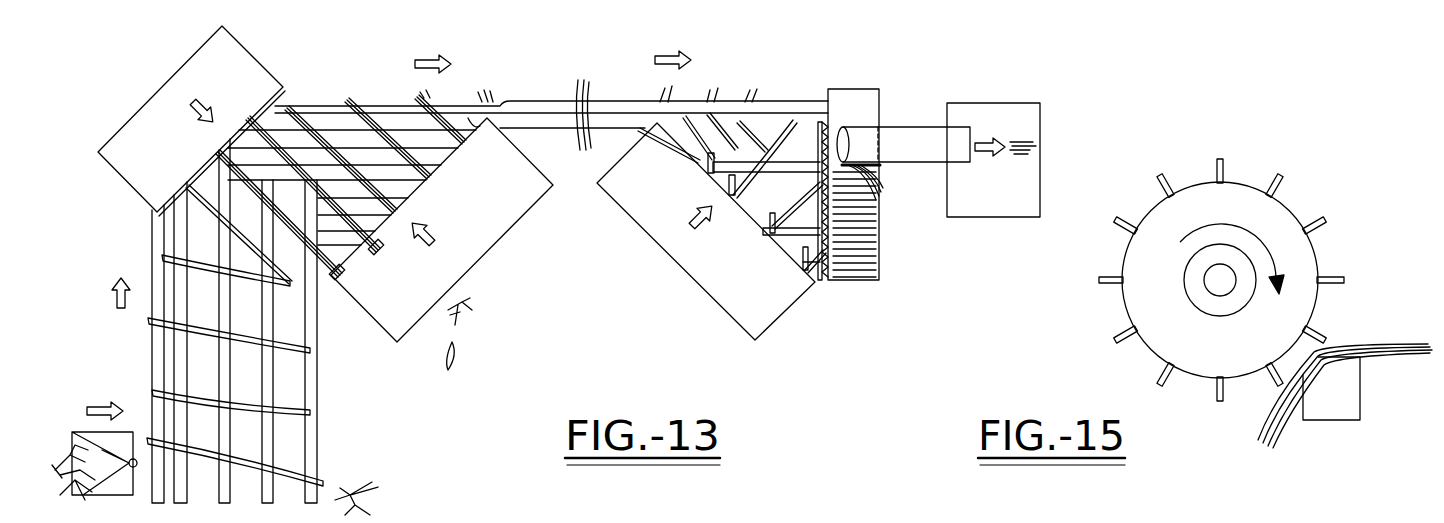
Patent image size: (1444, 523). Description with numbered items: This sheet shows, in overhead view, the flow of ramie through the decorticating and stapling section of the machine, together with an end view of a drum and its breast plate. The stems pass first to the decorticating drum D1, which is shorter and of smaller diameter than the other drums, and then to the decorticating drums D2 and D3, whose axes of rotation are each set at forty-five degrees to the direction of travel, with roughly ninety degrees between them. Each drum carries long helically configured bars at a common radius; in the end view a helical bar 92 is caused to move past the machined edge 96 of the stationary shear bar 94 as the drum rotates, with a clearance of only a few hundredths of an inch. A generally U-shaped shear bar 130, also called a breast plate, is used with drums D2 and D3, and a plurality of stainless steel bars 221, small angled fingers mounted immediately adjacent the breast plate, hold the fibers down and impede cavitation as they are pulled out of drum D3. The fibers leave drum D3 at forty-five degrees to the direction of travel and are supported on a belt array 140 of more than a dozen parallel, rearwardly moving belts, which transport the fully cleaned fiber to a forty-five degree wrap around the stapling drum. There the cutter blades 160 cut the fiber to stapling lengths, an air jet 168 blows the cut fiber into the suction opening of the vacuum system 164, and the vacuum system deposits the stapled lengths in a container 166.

In FIG. 13, the decorticating drum D1 is at (163, 102).
In FIG. 13, the decorticating drum D2 is at (463, 259).
In FIG. 13, the decorticating drum D3 is at (683, 258).
In FIG. 13, the U-shaped shear bar 130 is at (337, 282).
In FIG. 13, the belt array 140 is at (745, 163).
In FIG. 13, the stainless steel bars 221 is at (727, 185).
In FIG. 13, the air jet 168 is at (832, 140).
In FIG. 13, the vacuum system 164 is at (917, 128).
In FIG. 13, the cutter blades 160 is at (880, 167).
In FIG. 13, the container 166 is at (1015, 112).
In FIG. 15, the helical bar 92 is at (1344, 278).
In FIG. 15, the stationary shear bar 94 is at (1360, 393).
In FIG. 15, the machined edge 96 is at (1312, 360).